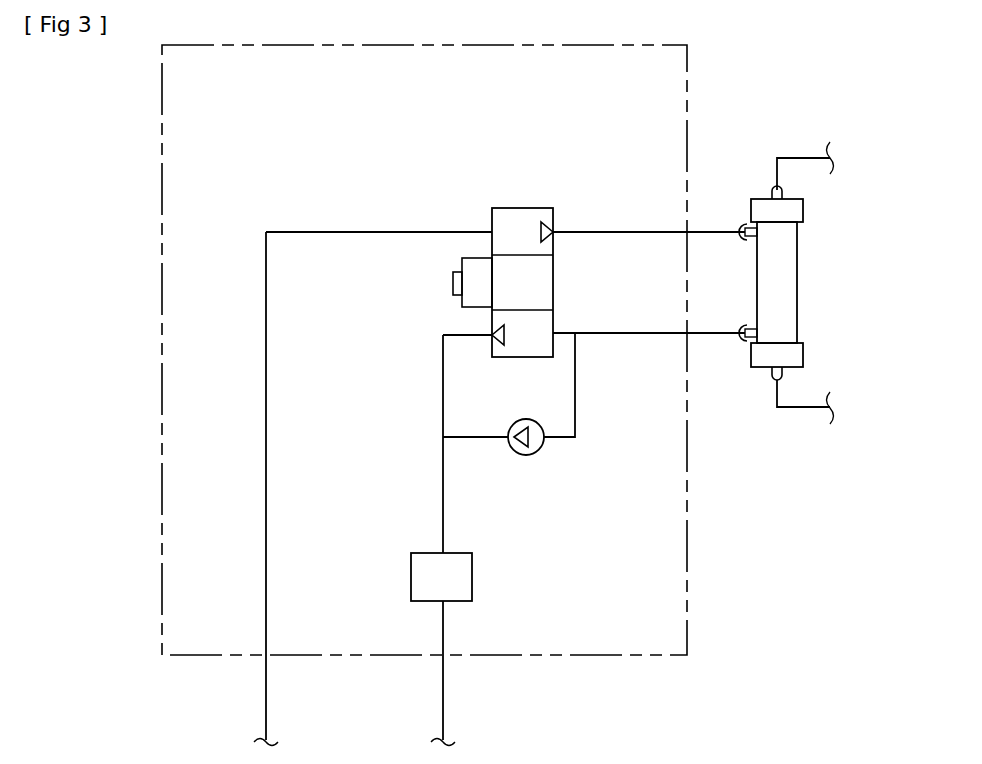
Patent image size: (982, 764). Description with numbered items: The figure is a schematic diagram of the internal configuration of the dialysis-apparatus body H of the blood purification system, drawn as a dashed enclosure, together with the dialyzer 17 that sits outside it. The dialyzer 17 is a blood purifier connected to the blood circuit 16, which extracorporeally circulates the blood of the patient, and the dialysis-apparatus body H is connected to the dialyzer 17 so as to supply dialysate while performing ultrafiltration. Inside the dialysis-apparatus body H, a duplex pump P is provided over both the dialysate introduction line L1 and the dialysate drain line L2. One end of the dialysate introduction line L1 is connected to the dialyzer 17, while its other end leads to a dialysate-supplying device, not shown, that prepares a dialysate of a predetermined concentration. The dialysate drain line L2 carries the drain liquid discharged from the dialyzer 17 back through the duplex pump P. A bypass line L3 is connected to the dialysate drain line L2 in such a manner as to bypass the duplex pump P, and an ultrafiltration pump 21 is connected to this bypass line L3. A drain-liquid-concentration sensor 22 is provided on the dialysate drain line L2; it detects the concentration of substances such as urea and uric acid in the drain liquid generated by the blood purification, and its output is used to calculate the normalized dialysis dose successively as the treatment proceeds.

The dialysis-apparatus body H is at (162, 156).
The duplex pump P is at (522, 206).
The dialysate introduction line L1 is at (623, 230).
The dialysate drain line L2 is at (645, 332).
The bypass line L3 is at (575, 398).
The ultrafiltration pump 21 is at (527, 456).
The drain-liquid-concentration sensor 22 is at (472, 577).
The blood circuit 16 is at (808, 150).
The dialyzer 17 is at (800, 275).